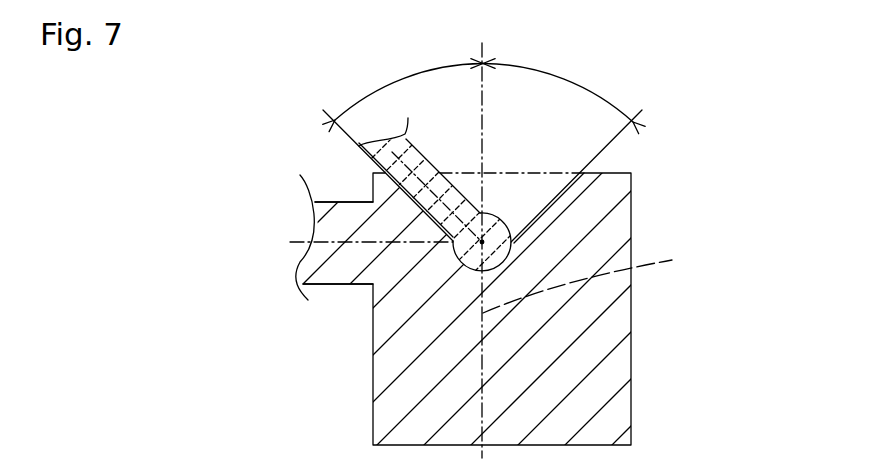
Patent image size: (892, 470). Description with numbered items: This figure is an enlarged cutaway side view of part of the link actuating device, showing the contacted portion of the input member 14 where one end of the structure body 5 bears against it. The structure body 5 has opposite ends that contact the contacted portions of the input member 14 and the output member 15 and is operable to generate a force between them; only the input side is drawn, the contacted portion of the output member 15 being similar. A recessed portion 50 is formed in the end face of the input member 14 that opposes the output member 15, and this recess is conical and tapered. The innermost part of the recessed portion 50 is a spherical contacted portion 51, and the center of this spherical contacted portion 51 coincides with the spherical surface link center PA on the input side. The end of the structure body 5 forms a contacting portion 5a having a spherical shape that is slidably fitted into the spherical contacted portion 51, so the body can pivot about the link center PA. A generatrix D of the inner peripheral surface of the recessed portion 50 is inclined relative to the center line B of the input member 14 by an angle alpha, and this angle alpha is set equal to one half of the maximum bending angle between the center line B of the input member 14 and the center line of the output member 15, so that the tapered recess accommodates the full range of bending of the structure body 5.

The structure body 5 is at (361, 155).
The contacting portion 5a is at (473, 271).
The spherical contacted portion 51 is at (502, 258).
The recessed portion 50 is at (552, 175).
The input member 14 is at (486, 310).
The output member 15 is at (338, 243).
The spherical surface link center PA is at (482, 242).
The center line B is at (605, 278).
The generatrix D is at (348, 137).